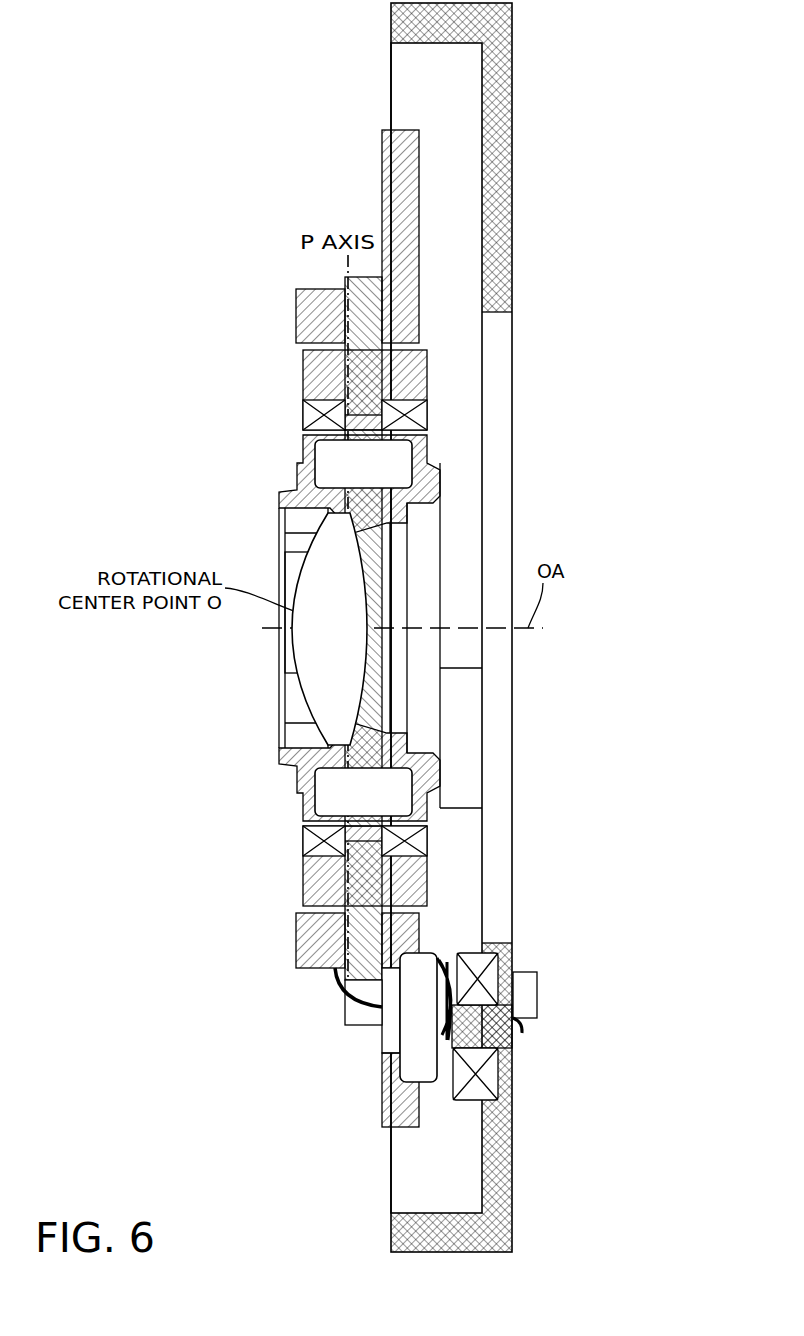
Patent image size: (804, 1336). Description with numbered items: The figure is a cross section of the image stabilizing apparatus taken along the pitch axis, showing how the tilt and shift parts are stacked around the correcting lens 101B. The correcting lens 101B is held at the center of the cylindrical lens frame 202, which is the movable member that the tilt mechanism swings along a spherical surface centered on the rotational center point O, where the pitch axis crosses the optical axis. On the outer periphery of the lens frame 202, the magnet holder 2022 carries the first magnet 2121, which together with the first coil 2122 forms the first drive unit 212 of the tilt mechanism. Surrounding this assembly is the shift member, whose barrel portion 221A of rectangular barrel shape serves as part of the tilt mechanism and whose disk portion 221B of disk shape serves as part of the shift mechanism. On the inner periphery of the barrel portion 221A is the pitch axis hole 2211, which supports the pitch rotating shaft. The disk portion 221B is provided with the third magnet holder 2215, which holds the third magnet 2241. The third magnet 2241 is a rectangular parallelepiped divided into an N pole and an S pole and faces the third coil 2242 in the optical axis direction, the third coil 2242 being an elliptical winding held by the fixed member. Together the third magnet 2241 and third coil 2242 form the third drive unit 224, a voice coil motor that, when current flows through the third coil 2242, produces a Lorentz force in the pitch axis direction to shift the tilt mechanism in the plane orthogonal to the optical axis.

The correcting lens 101B is at (280, 683).
The lens frame 202 is at (293, 497).
The magnet holder 2022 is at (297, 777).
The first drive unit 212 is at (183, 412).
The first magnet 2121 is at (330, 478).
The first coil 2122 is at (310, 415).
The barrel portion 221A is at (296, 290).
The disk portion 221B is at (395, 161).
The pitch axis hole 2211 is at (330, 942).
The third magnet holder 2215 is at (392, 1027).
The third drive unit 224 is at (507, 1011).
The third magnet 2241 is at (415, 1033).
The third coil 2242 is at (475, 970).